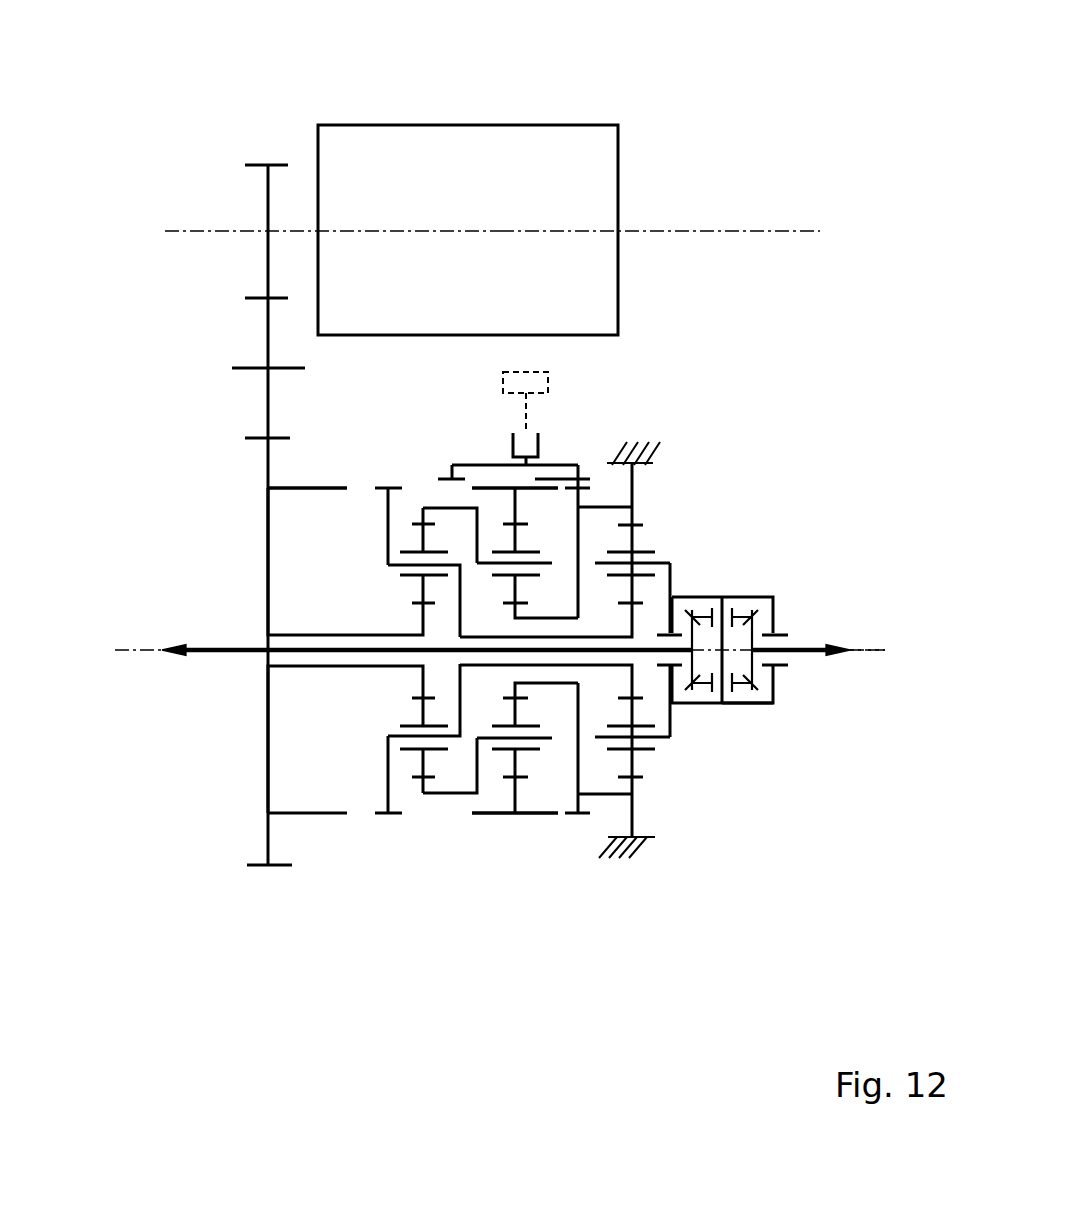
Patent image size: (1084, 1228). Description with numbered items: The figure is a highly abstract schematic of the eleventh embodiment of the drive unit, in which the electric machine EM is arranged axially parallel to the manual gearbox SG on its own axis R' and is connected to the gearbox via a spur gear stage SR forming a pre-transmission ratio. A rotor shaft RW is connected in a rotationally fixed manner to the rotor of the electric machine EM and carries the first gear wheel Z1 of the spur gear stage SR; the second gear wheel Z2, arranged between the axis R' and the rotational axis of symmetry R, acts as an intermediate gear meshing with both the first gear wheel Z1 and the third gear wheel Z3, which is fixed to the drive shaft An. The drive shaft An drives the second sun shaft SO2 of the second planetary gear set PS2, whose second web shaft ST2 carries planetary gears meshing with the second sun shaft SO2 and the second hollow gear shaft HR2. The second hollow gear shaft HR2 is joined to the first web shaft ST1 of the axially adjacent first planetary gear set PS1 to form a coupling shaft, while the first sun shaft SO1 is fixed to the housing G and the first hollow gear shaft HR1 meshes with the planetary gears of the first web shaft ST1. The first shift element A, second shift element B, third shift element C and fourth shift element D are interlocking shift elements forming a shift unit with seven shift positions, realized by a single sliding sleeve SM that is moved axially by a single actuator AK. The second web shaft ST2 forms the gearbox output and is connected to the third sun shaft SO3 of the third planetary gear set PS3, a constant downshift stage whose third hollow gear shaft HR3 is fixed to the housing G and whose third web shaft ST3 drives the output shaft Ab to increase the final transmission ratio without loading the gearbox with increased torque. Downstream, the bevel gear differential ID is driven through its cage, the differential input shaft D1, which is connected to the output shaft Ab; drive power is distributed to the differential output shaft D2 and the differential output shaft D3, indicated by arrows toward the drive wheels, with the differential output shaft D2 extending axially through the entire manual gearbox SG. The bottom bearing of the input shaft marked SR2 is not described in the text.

The first gear wheel Z1 is at (267, 193).
The spur gear stage SR is at (267, 140).
The rotor shaft RW is at (300, 231).
The third shift element C is at (334, 466).
The second shift element B is at (391, 464).
The first shift element A is at (456, 436).
The actuator AK is at (532, 345).
The electric machine EM is at (622, 102).
The sliding sleeve SM is at (560, 431).
The axis R' is at (660, 117).
The manual gearbox SG is at (786, 398).
The first hollow gear shaft HR1 is at (517, 512).
The third hollow gear shaft HR3 is at (632, 517).
The third web shaft ST3 is at (660, 560).
The output shaft Ab is at (670, 580).
The differential ID is at (798, 623).
The rotational axis of symmetry R is at (874, 672).
The differential output shaft D3 is at (788, 652).
The differential input shaft D1 is at (735, 703).
The third sun shaft SO3 is at (672, 703).
The second gear wheel Z2 is at (262, 406).
The third gear wheel Z3 is at (268, 462).
The fourth shift element D is at (295, 516).
The second web shaft ST2 is at (393, 567).
The second sun shaft SO2 is at (423, 627).
The differential output shaft D2 is at (220, 655).
The drive shaft An is at (317, 668).
The second spur gear shaft SR2 is at (270, 890).
The second planetary gear set PS2 is at (423, 845).
The first planetary gear set PS1 is at (515, 845).
The third planetary gear set PS3 is at (632, 890).
The second hollow gear shaft HR2 is at (423, 783).
The first sun shaft SO1 is at (515, 687).
The first web shaft ST1 is at (545, 740).
The housing G is at (660, 872).